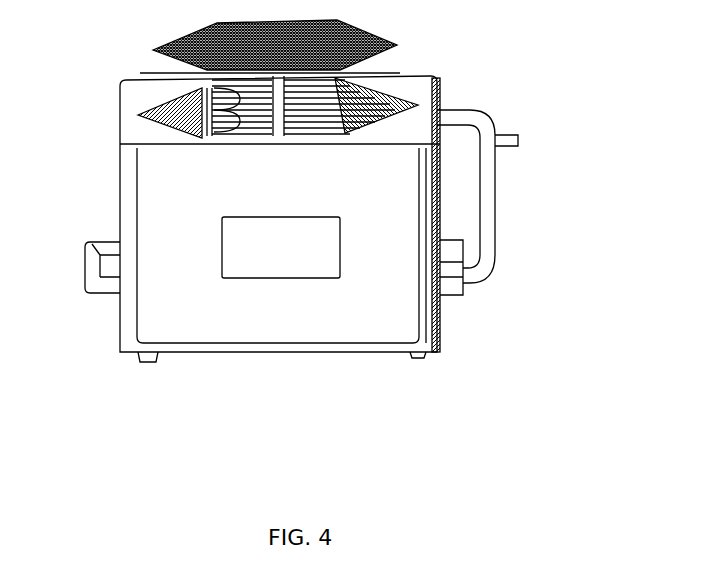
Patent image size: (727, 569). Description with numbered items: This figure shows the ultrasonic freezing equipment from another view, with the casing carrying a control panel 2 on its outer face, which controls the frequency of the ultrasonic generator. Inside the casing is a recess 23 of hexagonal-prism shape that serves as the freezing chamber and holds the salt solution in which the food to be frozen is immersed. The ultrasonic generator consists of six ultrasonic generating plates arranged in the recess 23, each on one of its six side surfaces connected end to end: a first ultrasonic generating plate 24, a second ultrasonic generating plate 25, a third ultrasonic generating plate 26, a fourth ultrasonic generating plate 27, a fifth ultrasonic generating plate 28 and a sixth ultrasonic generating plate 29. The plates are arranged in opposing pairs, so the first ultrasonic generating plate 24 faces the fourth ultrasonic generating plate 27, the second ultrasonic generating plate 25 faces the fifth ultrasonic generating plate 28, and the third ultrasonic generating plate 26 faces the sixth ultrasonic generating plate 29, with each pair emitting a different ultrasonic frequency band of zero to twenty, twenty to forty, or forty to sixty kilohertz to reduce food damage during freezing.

The control panel 2 is at (300, 257).
The recess 23 is at (345, 100).
The first ultrasonic generating plate 24 is at (273, 133).
The second ultrasonic generating plate 25 is at (385, 120).
The third ultrasonic generating plate 26 is at (387, 97).
The fourth ultrasonic generating plate 27 is at (240, 85).
The fifth ultrasonic generating plate 28 is at (173, 102).
The sixth ultrasonic generating plate 29 is at (190, 130).